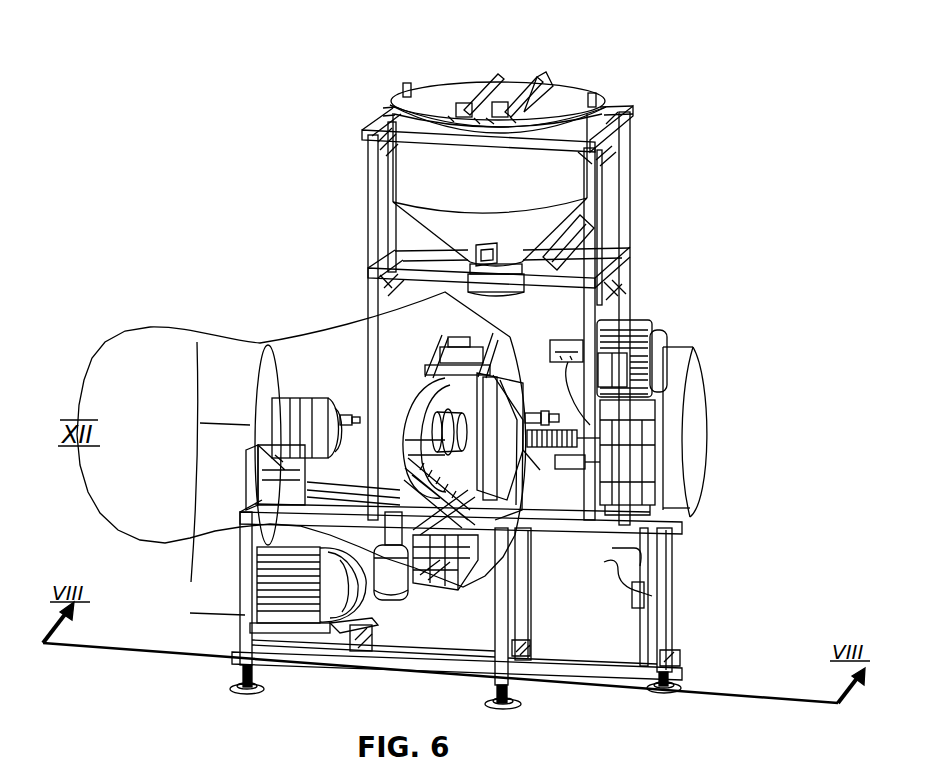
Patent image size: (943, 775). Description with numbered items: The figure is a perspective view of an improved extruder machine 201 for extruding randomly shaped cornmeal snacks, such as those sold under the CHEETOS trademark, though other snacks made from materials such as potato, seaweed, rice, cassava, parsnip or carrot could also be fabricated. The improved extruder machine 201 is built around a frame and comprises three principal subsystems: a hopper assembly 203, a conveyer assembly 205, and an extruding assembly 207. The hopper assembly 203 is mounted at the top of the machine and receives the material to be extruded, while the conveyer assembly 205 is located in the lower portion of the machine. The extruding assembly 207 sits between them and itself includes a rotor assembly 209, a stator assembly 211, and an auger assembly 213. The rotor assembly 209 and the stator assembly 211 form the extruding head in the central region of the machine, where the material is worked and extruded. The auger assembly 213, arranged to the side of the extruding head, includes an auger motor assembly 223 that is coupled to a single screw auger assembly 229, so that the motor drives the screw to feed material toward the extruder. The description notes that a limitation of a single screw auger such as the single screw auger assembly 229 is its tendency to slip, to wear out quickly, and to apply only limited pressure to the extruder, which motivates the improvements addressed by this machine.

The improved extruder machine 201 is at (262, 264).
The hopper assembly 203 is at (446, 86).
The conveyer assembly 205 is at (460, 600).
The extruding assembly 207 is at (168, 404).
The rotor assembly 209 is at (372, 350).
The stator assembly 211 is at (497, 444).
The auger assembly 213 is at (656, 284).
The auger motor assembly 223 is at (662, 330).
The single screw auger assembly 229 is at (558, 472).